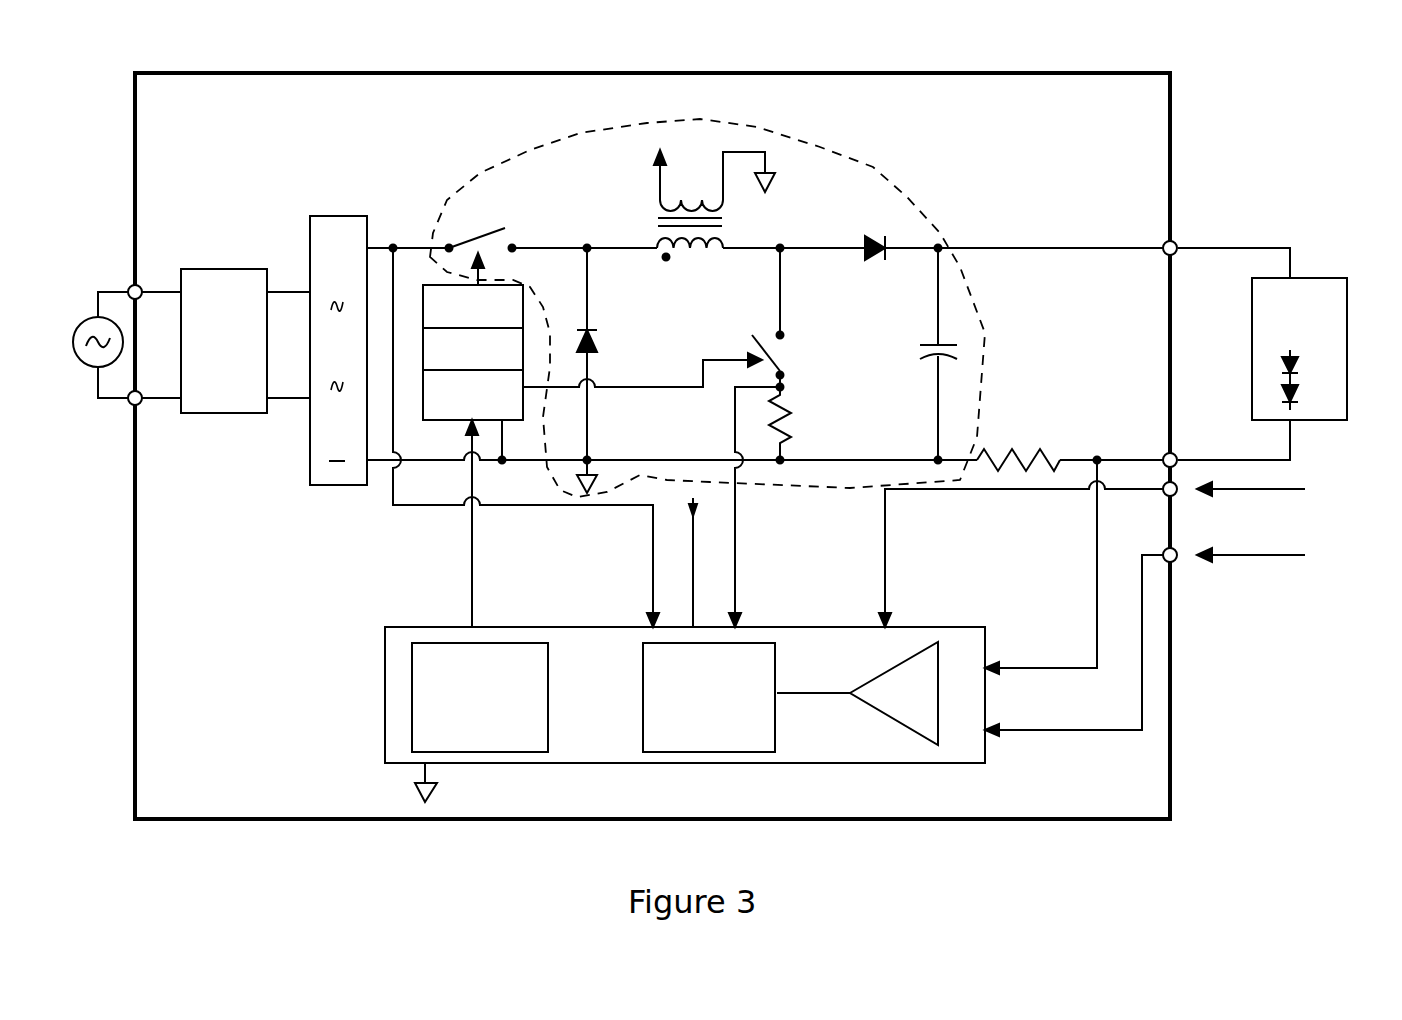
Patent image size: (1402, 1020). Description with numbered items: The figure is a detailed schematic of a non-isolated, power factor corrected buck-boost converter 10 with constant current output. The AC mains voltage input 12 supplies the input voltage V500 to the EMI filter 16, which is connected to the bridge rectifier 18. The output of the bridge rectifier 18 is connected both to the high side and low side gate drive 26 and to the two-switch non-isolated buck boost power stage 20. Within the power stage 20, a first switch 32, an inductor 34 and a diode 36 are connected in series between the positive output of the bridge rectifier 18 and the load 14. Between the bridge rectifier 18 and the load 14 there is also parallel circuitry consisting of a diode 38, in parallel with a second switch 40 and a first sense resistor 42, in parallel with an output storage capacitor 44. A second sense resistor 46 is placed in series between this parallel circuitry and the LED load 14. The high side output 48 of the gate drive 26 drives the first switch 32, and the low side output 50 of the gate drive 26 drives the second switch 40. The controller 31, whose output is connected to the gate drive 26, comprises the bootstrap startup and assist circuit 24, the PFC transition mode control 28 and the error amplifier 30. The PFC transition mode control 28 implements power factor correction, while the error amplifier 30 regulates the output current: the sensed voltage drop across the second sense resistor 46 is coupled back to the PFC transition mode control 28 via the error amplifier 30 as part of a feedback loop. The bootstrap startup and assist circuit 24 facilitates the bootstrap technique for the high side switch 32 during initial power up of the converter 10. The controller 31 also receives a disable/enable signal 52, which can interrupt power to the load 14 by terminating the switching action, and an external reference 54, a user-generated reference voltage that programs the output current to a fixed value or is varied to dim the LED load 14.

The converter 10 is at (683, 68).
The AC mains voltage input 12 is at (90, 362).
The load 14 is at (1312, 270).
The EMI filter 16 is at (207, 269).
The bridge rectifier 18 is at (350, 216).
The power stage 20 is at (942, 233).
The bootstrap assist and start up circuit 24 is at (545, 650).
The high side and low side gate drive 26 is at (421, 362).
The PFC transition mode control 28 is at (655, 740).
The error amplifier 30 is at (905, 718).
The controller 31 is at (902, 623).
The first switch 32 is at (487, 233).
The inductor 34 is at (722, 228).
The diode 36 is at (875, 237).
The diode 38 is at (593, 340).
The second switch 40 is at (777, 357).
The first sense resistor 42 is at (803, 420).
The output storage capacitor 44 is at (957, 353).
The second sense resistor 46 is at (1047, 447).
The high side output 48 is at (515, 317).
The low side output 50 is at (515, 405).
The disable/enable signal 52 is at (1318, 512).
The external reference 54 is at (1332, 572).